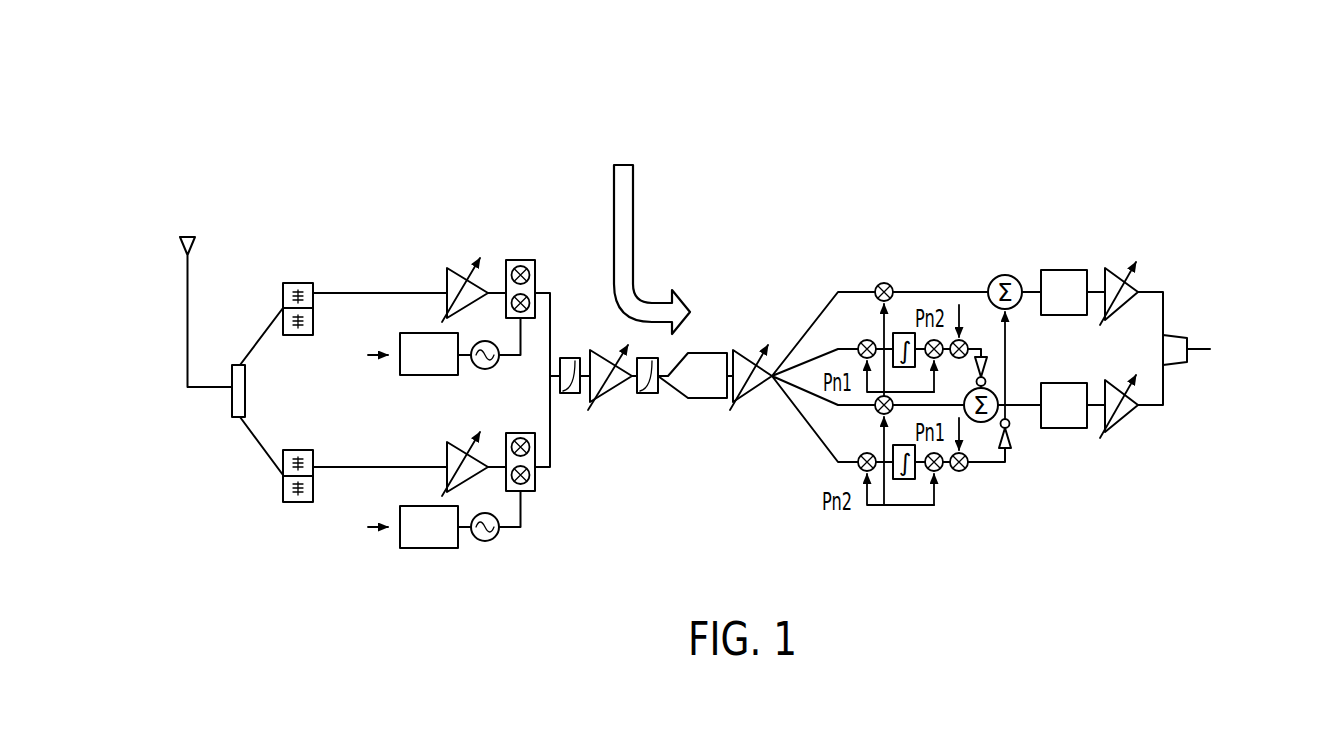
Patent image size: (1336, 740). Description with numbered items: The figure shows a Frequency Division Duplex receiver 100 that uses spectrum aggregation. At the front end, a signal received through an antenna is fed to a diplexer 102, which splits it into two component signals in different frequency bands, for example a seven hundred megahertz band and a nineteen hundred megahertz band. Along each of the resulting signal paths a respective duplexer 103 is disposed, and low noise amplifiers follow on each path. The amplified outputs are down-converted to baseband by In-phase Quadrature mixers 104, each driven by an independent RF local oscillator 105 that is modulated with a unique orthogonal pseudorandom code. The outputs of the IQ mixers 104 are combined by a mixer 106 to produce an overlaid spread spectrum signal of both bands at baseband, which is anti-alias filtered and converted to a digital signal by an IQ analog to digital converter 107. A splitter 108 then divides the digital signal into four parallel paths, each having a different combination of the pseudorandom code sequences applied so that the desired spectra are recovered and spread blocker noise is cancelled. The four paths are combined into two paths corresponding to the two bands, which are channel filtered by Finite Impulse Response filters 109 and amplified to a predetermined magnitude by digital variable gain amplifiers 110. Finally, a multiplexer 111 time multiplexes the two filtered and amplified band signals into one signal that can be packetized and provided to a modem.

The FDD receiver 100 is at (182, 250).
The diplexer 102 is at (232, 400).
The duplexer 103 is at (297, 283).
The IQ mixer 104 is at (522, 260).
The RF local oscillator 105 is at (420, 375).
The mixer 106 is at (573, 394).
The IQ analog to digital converter 107 is at (613, 398).
The splitter 108 is at (782, 396).
The FIR filter 109 is at (1058, 270).
The digital variable gain amplifier 110 is at (1113, 271).
The multiplexer 111 is at (1181, 336).